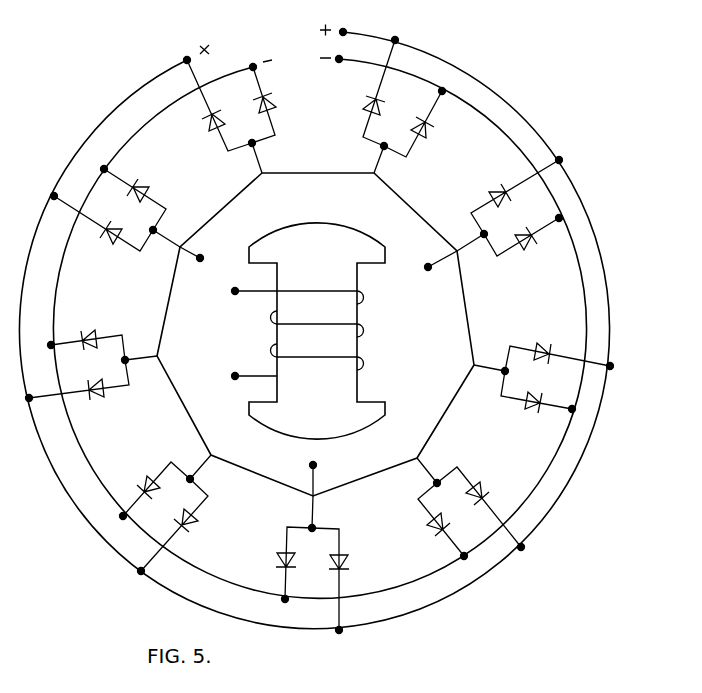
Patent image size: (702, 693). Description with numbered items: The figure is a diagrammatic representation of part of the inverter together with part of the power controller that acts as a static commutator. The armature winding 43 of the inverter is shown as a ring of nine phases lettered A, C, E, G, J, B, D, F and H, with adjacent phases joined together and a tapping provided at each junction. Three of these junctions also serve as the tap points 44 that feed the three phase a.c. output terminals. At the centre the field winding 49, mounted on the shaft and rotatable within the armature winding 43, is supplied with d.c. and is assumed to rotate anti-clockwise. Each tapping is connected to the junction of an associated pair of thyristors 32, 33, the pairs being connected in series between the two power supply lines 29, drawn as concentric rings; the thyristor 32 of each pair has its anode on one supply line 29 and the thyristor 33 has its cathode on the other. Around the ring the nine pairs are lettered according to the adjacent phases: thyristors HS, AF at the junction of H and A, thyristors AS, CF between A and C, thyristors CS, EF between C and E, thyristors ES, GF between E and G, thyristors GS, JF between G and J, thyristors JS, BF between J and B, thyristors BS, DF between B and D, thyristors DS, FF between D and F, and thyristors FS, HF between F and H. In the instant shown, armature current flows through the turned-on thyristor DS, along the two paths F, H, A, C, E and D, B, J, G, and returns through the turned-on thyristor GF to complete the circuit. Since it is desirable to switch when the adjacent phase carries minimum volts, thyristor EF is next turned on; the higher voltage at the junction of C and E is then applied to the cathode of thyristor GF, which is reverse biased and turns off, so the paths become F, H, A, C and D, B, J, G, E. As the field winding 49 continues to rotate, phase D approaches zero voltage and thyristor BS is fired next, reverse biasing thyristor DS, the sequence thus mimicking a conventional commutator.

The power supply lines 29 is at (537, 128).
The thyristor 32 is at (358, 108).
The thyristor 33 is at (437, 134).
The armature winding 43 is at (470, 333).
The tap points 44 is at (338, 453).
The field winding 49 is at (365, 332).
The thyristor H S HS is at (213, 105).
The thyristor A F AF is at (277, 105).
The thyristor A S AS is at (356, 93).
The thyristor C F CF is at (429, 125).
The thyristor C S CS is at (510, 197).
The thyristor E F EF is at (521, 245).
The thyristor E S ES is at (557, 339).
The thyristor G F GF is at (536, 405).
The thyristor G S GS is at (479, 506).
The thyristor J F JF is at (437, 521).
The thyristor J S JS is at (352, 560).
The thyristor B F BF is at (279, 563).
The thyristor B S BS is at (185, 525).
The thyristor D F DF is at (151, 487).
The thyristor D S DS is at (79, 397).
The thyristor F F FF is at (88, 329).
The thyristor F S FS is at (103, 235).
The thyristor H F HF is at (137, 194).